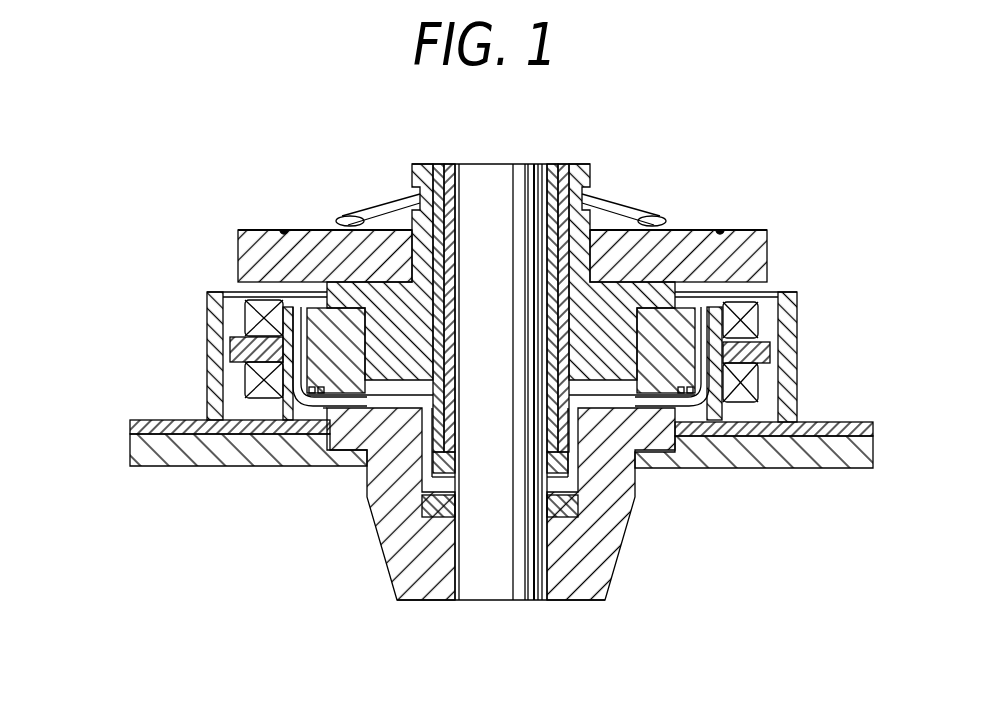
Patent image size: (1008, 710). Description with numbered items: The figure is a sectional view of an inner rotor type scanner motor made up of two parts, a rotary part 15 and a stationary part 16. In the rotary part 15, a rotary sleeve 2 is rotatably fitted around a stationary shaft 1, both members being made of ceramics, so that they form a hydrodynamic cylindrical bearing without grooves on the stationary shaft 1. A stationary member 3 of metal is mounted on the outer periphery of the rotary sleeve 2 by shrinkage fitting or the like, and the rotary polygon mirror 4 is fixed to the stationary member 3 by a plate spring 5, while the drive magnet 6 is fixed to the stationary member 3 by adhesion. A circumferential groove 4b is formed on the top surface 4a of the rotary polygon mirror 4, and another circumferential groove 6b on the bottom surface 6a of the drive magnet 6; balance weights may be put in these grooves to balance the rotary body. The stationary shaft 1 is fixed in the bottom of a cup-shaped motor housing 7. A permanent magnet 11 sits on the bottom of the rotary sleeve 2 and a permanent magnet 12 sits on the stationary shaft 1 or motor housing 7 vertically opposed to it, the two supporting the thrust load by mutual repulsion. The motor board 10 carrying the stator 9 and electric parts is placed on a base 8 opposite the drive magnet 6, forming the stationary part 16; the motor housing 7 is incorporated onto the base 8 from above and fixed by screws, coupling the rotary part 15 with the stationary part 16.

The stationary shaft 1 is at (500, 190).
The rotary sleeve 2 is at (555, 173).
The stationary member 3 is at (576, 175).
The rotary polygon mirror 4 is at (253, 233).
The top surface of the rotary polygon mirror 4a is at (320, 228).
The circumferential groove 4b is at (284, 230).
The plate spring 5 is at (613, 218).
The drive magnet 6 is at (358, 396).
The bottom surface of the drive magnet 6a is at (345, 378).
The circumferential groove 6b is at (308, 402).
The motor housing 7 is at (605, 598).
The base 8 is at (785, 450).
The stator 9 is at (753, 320).
The motor board 10 is at (851, 430).
The permanent magnet 11 is at (572, 466).
The permanent magnet 12 is at (580, 580).
The rotary part 15 is at (678, 206).
The stationary part 16 is at (360, 528).